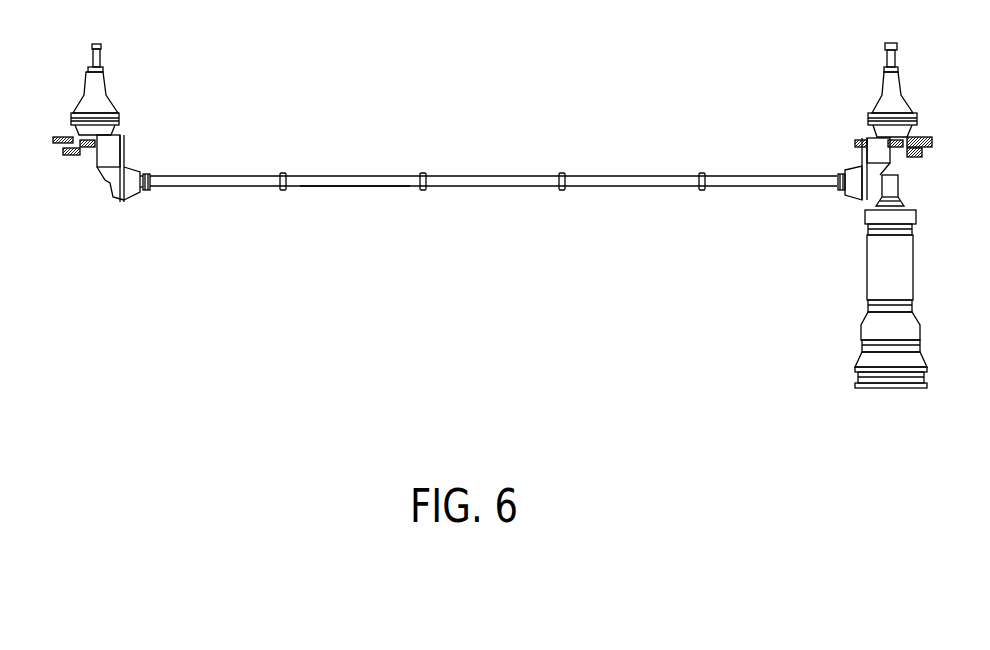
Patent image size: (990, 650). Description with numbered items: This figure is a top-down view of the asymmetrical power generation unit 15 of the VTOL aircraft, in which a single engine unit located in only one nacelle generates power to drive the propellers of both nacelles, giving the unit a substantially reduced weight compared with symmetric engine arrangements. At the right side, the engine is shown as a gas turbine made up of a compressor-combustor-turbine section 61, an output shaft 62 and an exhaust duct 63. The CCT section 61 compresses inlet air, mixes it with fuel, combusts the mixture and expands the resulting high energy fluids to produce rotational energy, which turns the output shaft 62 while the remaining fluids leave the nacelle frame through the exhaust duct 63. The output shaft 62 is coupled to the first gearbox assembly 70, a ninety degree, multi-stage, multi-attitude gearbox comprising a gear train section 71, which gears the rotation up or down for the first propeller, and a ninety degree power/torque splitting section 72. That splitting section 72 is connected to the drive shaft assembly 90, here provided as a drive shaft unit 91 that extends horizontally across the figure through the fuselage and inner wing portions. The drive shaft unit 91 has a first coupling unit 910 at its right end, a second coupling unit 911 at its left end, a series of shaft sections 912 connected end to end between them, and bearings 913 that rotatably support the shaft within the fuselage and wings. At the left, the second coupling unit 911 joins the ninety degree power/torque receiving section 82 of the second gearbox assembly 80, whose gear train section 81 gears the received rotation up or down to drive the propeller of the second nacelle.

The asymmetrical power generation unit 15 is at (814, 159).
The compressor-combustor-turbine (CCT) section 61 is at (905, 278).
The output shaft 62 is at (900, 190).
The exhaust duct 63 is at (915, 360).
The first gearbox assembly 70 is at (917, 122).
The gear train section 71 is at (893, 97).
The 90 degree power/torque splitting section 72 is at (875, 152).
The second gearbox assembly 80 is at (120, 121).
The gear train section 81 is at (93, 105).
The 90 degree power/torque receiving section 82 is at (105, 160).
The drive shaft assembly 90 is at (463, 176).
The drive shaft unit 91 is at (408, 190).
The first coupling unit 910 is at (850, 192).
The second coupling unit 911 is at (130, 200).
The shaft sections 912 is at (741, 188).
The bearings 913 is at (285, 173).